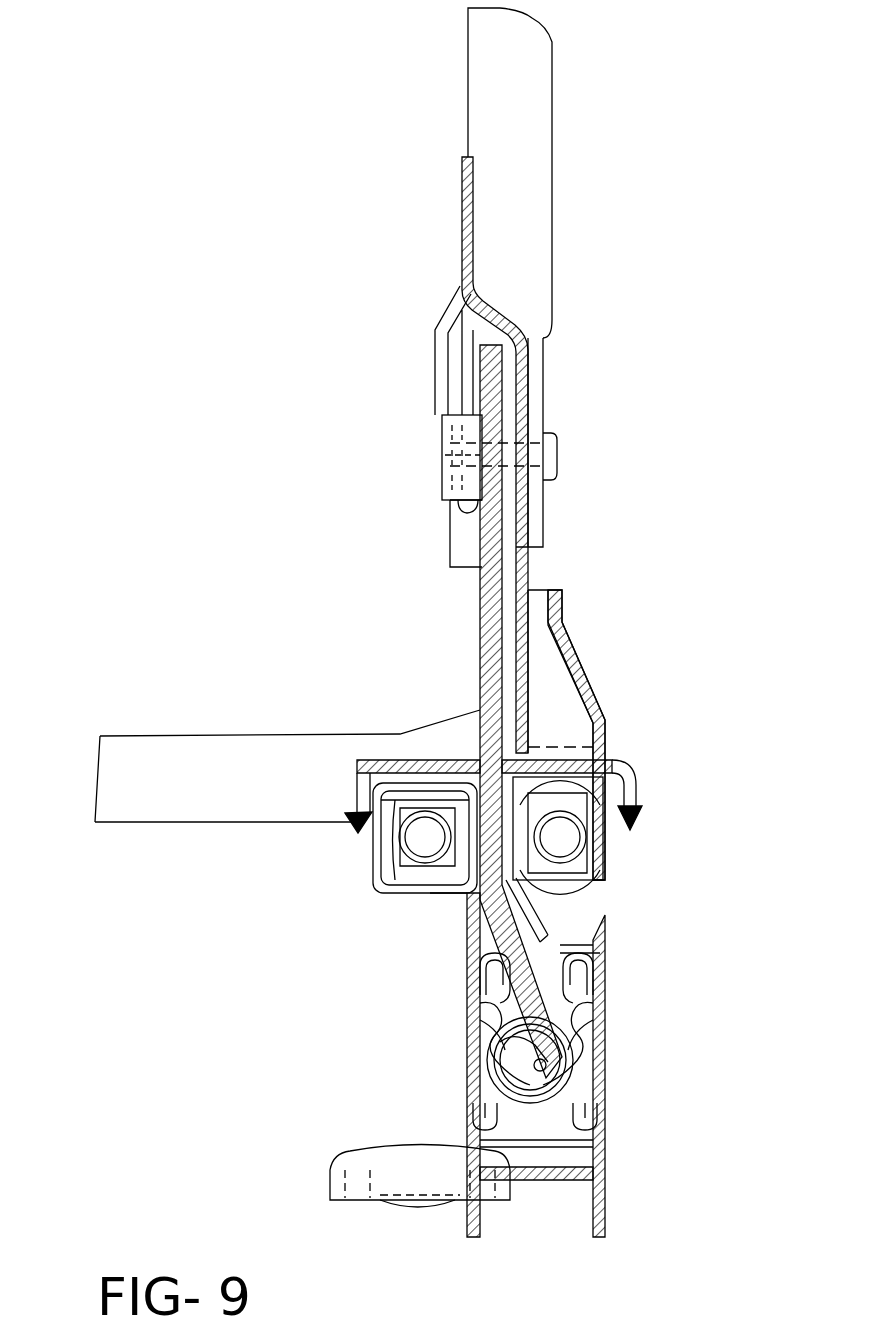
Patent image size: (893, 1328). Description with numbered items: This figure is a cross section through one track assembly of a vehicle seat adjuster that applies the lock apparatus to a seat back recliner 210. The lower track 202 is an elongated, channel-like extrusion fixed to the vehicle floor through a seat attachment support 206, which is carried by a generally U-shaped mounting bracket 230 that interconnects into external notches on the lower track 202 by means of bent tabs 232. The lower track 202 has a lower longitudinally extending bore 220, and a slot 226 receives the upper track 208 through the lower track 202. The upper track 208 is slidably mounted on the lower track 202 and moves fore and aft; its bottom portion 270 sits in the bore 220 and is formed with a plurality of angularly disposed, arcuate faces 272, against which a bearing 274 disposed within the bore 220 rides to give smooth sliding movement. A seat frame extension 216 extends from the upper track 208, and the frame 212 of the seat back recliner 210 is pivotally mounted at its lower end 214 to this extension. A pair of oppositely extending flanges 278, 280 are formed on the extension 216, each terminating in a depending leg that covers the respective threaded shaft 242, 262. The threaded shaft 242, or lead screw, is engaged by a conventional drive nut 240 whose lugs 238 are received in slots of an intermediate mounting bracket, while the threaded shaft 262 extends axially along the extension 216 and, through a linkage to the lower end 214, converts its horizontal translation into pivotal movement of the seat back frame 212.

The seat back recliner 210 is at (366, 52).
The frame 212 is at (538, 300).
The lower end 214 is at (535, 528).
The seat frame extension 216 is at (490, 655).
The flange 280 is at (575, 748).
The flange 278 is at (420, 768).
The lug 238 is at (373, 838).
The drive nut 240 is at (405, 845).
The threaded shaft 242 is at (412, 872).
The threaded shaft 262 is at (562, 838).
The upper track 208 is at (545, 924).
The lower track 202 is at (605, 1037).
The bent tab 232 is at (605, 1135).
The mounting bracket 230 is at (605, 1117).
The bore 220 is at (605, 1067).
The arcuate face 272 is at (467, 1075).
The bottom portion 270 is at (467, 1040).
The bearing 274 is at (605, 1087).
The slot 226 is at (600, 932).
The seat attachment support 206 is at (356, 1143).